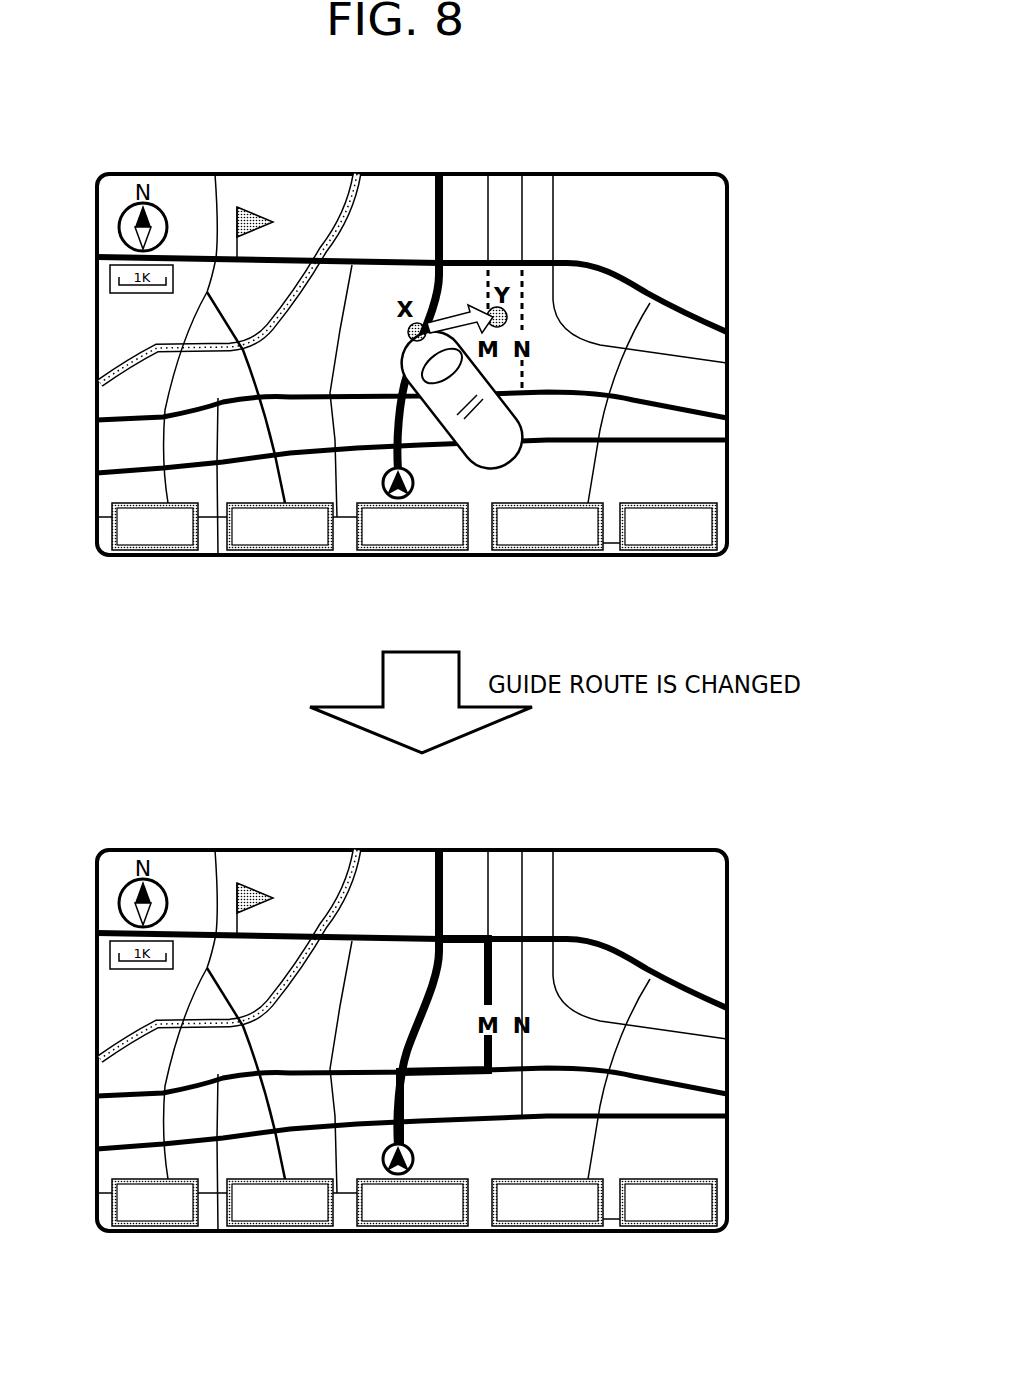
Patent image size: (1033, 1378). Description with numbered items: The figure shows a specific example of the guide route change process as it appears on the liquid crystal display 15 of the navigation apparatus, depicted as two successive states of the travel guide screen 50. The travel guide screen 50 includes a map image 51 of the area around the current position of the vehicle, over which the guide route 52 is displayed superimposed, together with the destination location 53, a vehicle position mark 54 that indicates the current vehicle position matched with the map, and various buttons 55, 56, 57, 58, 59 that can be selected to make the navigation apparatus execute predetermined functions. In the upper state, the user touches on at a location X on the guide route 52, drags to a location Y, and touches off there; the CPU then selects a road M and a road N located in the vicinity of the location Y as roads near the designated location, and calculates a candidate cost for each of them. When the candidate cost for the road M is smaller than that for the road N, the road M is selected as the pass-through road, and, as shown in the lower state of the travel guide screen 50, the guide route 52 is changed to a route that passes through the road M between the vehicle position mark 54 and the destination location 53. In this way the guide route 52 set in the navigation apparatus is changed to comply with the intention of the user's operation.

The liquid crystal display 15 is at (638, 173).
The travel guide screen 50 is at (523, 173).
The map image 51 is at (277, 198).
The guide route 52 is at (383, 257).
The destination location 53 is at (237, 207).
The vehicle position mark 54 is at (413, 480).
The button 55 is at (187, 535).
The button 56 is at (320, 535).
The button 57 is at (448, 538).
The button 58 is at (588, 538).
The button 59 is at (697, 538).